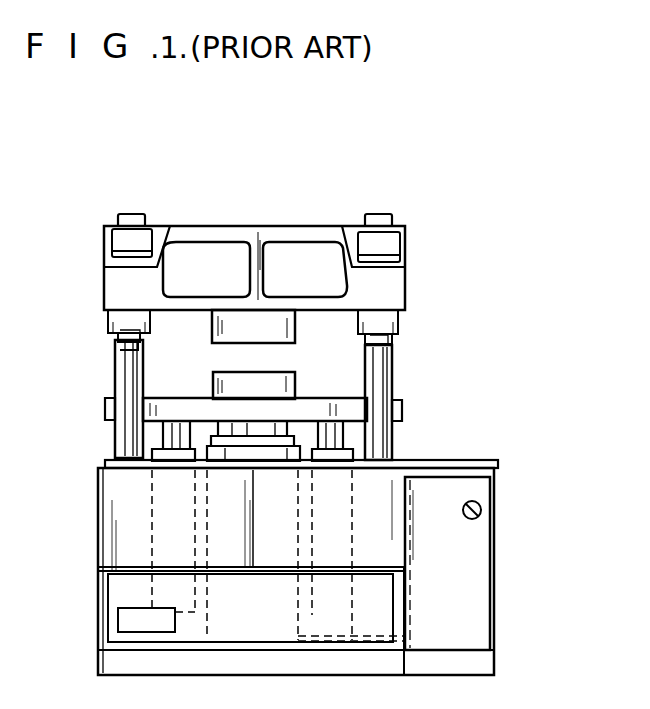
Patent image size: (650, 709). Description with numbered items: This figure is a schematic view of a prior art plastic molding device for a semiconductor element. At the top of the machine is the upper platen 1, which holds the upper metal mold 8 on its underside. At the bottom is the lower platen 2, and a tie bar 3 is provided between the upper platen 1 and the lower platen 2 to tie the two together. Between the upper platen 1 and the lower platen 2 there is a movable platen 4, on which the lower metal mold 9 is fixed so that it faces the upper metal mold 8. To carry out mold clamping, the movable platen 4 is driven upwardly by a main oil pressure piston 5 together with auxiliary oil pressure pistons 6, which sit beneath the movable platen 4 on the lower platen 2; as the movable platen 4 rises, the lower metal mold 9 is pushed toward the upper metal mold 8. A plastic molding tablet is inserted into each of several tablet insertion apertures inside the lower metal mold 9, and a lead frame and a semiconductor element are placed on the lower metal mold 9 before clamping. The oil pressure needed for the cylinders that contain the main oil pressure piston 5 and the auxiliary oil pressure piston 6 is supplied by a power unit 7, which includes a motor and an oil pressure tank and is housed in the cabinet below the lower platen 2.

The upper platen 1 is at (407, 282).
The lower platen 2 is at (397, 465).
The tie bar 3 is at (385, 378).
The movable platen 4 is at (105, 405).
The main oil pressure piston 5 is at (235, 428).
The auxiliary oil pressure piston 6 is at (163, 431).
The power unit 7 is at (472, 543).
The upper metal mold 8 is at (296, 325).
The lower metal mold 9 is at (296, 380).